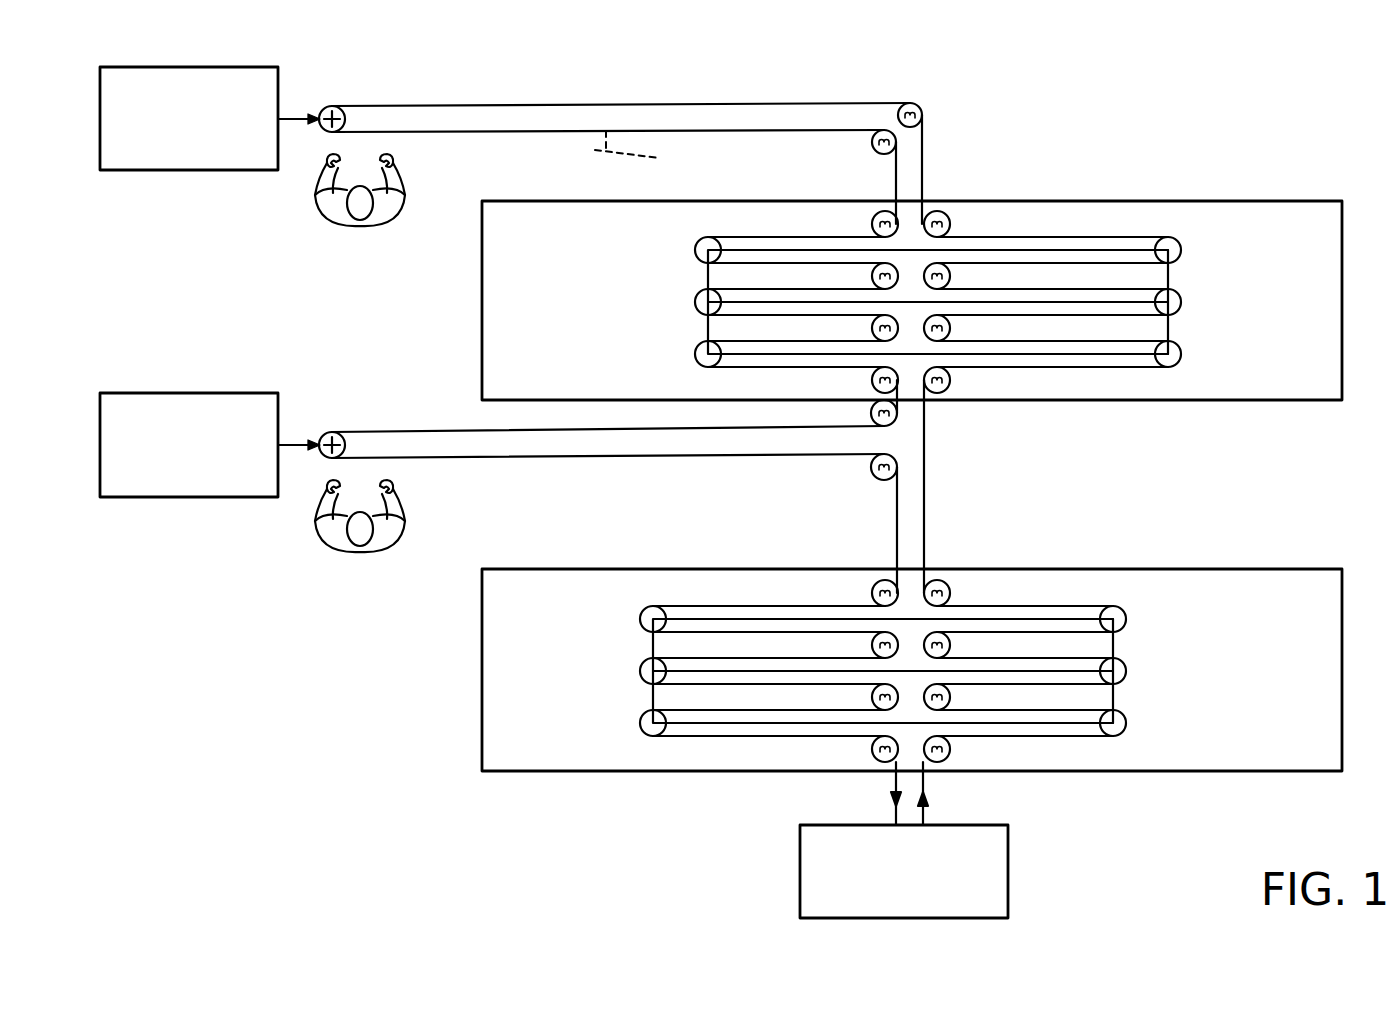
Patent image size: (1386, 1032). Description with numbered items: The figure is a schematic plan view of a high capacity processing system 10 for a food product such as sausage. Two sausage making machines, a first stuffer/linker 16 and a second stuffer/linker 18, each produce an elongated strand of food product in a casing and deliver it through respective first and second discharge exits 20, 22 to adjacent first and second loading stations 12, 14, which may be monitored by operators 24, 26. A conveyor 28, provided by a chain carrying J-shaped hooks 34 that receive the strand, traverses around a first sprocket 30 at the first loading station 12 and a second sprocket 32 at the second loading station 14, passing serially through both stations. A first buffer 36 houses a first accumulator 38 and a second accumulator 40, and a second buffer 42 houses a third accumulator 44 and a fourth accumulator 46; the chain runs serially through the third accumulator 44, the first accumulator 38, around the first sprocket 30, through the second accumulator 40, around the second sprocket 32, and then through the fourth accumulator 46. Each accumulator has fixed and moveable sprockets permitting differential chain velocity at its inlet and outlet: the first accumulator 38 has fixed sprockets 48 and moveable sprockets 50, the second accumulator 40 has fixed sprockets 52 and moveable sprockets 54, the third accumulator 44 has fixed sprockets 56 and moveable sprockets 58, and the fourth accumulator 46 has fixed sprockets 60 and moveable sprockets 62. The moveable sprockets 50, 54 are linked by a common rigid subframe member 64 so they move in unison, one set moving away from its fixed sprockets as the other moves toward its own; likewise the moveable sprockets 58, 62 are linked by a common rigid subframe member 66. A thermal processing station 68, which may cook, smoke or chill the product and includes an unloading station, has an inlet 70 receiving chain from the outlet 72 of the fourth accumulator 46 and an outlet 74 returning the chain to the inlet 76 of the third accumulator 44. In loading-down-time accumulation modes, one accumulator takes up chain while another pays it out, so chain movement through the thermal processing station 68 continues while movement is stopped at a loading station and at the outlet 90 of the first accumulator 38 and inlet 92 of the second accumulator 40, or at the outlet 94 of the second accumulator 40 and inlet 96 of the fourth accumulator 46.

The high capacity processing system 10 is at (1050, 133).
The first loading station 12 is at (313, 88).
The second loading station 14 is at (313, 416).
The stuffer/linker 16 is at (197, 170).
The stuffer/linker 18 is at (197, 497).
The first discharge exit 20 is at (292, 133).
The second discharge exit 22 is at (292, 462).
The operator 24 is at (358, 228).
The operator 26 is at (358, 555).
The conveyor 28 is at (540, 105).
The first sprocket 30 is at (339, 108).
The second sprocket 32 is at (339, 434).
The J-shaped hooks 34 is at (643, 154).
The first buffer 36 is at (1228, 201).
The first accumulator 38 is at (1050, 237).
The second accumulator 40 is at (795, 237).
The second buffer 42 is at (1133, 569).
The third accumulator 44 is at (1023, 606).
The fourth accumulator 46 is at (767, 606).
The first set of fixed sprockets 48 is at (950, 277).
The first set of moveable sprockets 50 is at (1181, 302).
The second set of fixed sprockets 52 is at (872, 277).
The second set of moveable sprockets 54 is at (697, 302).
The third set of fixed sprockets 56 is at (950, 645).
The third set of moveable sprockets 58 is at (1126, 671).
The fourth set of fixed sprockets 60 is at (872, 645).
The fourth set of moveable sprockets 62 is at (643, 671).
The common rigid subframe member 64 is at (1078, 302).
The common rigid subframe member 66 is at (1047, 671).
The thermal processing station 68 is at (800, 873).
The inlet 70 is at (893, 822).
The outlet 72 is at (888, 775).
The outlet 74 is at (925, 822).
The inlet 76 is at (931, 775).
The outlet 90 is at (937, 211).
The inlet 92 is at (884, 211).
The outlet 94 is at (871, 412).
The inlet 96 is at (897, 578).